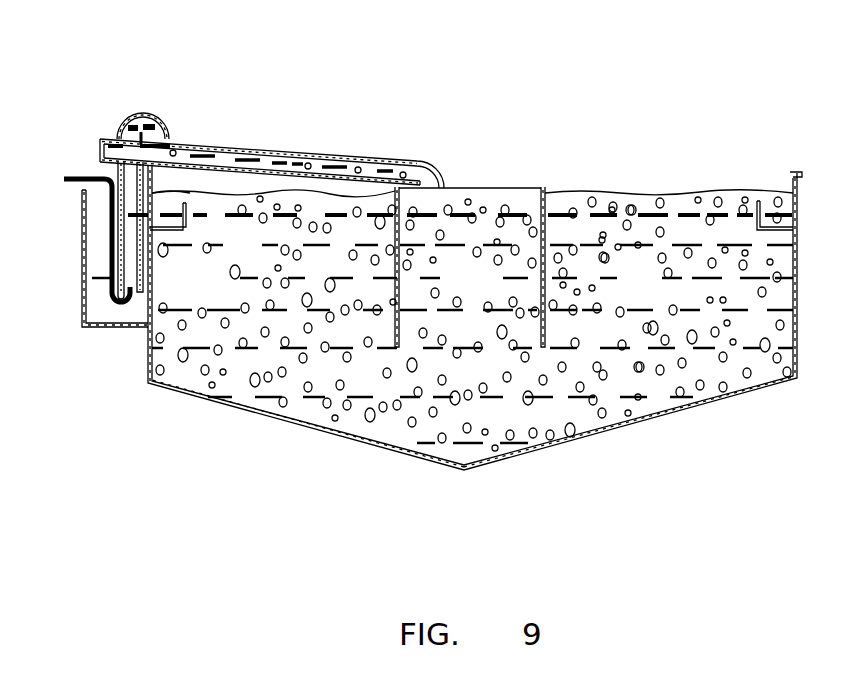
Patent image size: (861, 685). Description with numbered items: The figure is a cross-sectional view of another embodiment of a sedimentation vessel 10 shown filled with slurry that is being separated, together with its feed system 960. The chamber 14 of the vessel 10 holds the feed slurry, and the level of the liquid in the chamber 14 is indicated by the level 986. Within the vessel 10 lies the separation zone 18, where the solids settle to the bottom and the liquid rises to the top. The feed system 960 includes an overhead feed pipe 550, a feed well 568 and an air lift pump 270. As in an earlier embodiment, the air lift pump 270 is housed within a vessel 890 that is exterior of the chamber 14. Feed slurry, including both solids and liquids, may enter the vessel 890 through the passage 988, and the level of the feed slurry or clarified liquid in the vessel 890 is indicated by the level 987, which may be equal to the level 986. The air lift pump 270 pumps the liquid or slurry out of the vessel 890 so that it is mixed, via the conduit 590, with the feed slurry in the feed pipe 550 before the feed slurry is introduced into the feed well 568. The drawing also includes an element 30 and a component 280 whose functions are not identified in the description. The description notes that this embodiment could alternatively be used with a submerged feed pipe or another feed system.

The sedimentation vessel 10 is at (668, 433).
The chamber 14 is at (707, 178).
The separation zone 18 is at (652, 293).
The weir brackets 30 is at (190, 221).
The air lift pump 270 is at (133, 94).
The inlet pipe 280 is at (108, 228).
The overhead feed pipe 550 is at (263, 152).
The feed well 568 is at (488, 293).
The conduit 590 is at (170, 136).
The vessel 890 is at (100, 290).
The feed system 960 is at (503, 178).
The level of the liquid in the chamber 986 is at (188, 191).
The level of the feed slurry in the vessel 987 is at (102, 260).
The passage 988 is at (146, 287).